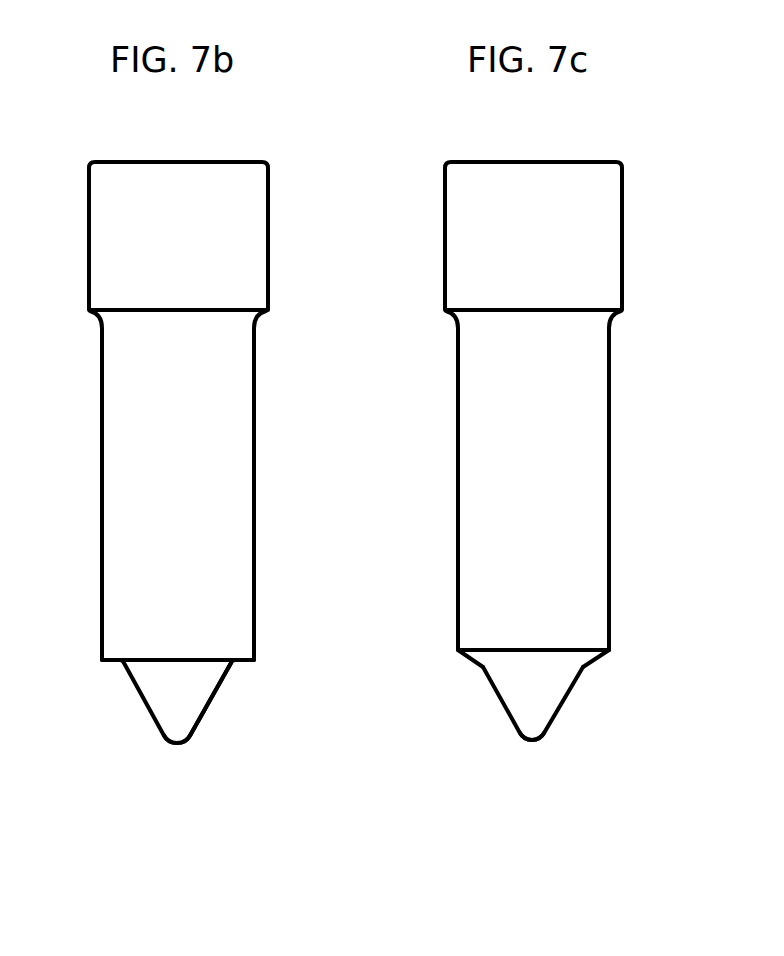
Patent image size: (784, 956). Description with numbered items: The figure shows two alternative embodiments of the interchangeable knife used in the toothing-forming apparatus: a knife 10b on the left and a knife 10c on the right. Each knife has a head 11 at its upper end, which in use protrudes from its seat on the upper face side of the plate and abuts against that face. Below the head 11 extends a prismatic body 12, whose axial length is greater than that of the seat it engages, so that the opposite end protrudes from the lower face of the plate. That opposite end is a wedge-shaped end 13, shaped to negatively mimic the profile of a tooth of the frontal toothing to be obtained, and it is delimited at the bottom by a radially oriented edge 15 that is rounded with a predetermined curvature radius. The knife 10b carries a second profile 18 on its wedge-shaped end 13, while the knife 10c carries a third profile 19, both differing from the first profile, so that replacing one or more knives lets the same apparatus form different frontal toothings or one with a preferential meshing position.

In FIG. 7b, the knife 10b is at (208, 499).
In FIG. 7c, the knife 10c is at (600, 492).
In FIG. 7b, the head 11 is at (234, 233).
In FIG. 7c, the head 11 is at (597, 208).
In FIG. 7b, the prismatic body 12 is at (227, 478).
In FIG. 7c, the prismatic body 12 is at (587, 470).
In FIG. 7b, the wedge-shaped end 13 is at (168, 693).
In FIG. 7c, the wedge-shaped end 13 is at (552, 696).
In FIG. 7b, the edge 15 is at (172, 751).
In FIG. 7c, the edge 15 is at (532, 751).
In FIG. 7b, the second profile 18 is at (213, 722).
In FIG. 7c, the third profile 19 is at (476, 675).